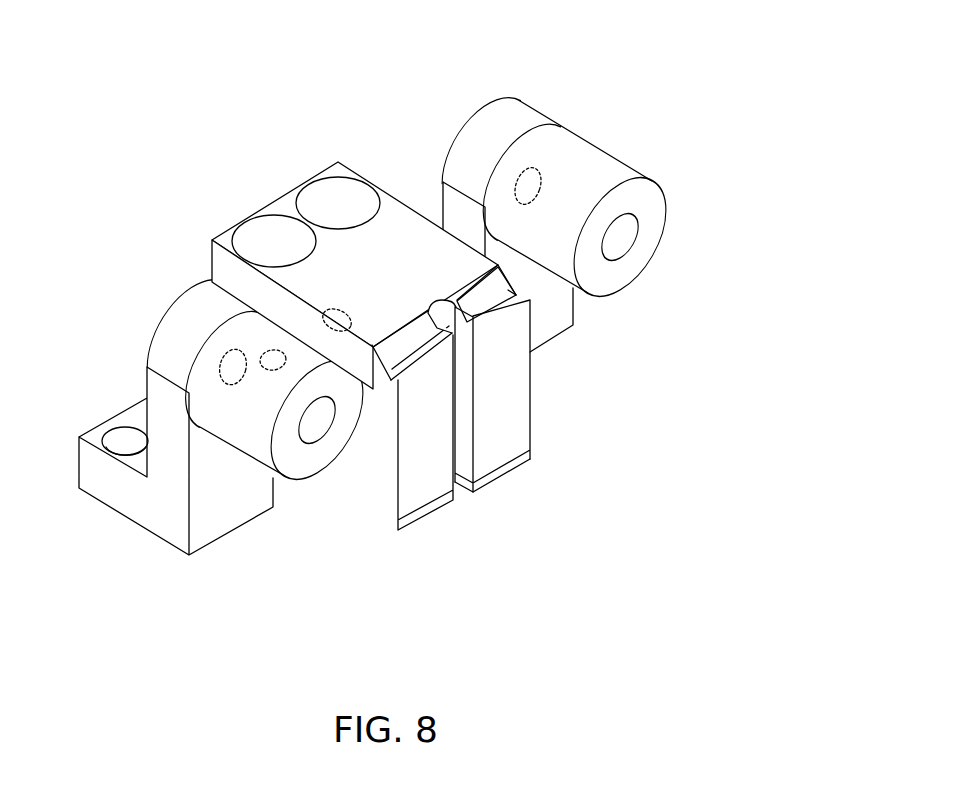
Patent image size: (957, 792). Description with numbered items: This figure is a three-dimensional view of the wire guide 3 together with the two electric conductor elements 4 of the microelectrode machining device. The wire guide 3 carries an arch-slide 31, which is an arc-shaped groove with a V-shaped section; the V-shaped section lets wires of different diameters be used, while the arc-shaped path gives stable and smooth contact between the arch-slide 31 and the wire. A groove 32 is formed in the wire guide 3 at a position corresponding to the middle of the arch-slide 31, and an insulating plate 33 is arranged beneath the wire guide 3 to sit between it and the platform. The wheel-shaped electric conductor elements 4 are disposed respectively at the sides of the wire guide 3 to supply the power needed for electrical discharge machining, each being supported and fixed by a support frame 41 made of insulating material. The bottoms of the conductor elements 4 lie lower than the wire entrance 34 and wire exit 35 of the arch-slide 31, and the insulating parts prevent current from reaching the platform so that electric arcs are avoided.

The wire guide 3 is at (514, 425).
The arch-slide 31 is at (485, 310).
The groove 32 is at (465, 425).
The insulating plate 33 is at (503, 463).
The wire entrance 34 is at (510, 291).
The wire exit 35 is at (391, 366).
The electric conductor element 4 is at (297, 470).
The support frame 41 is at (153, 520).